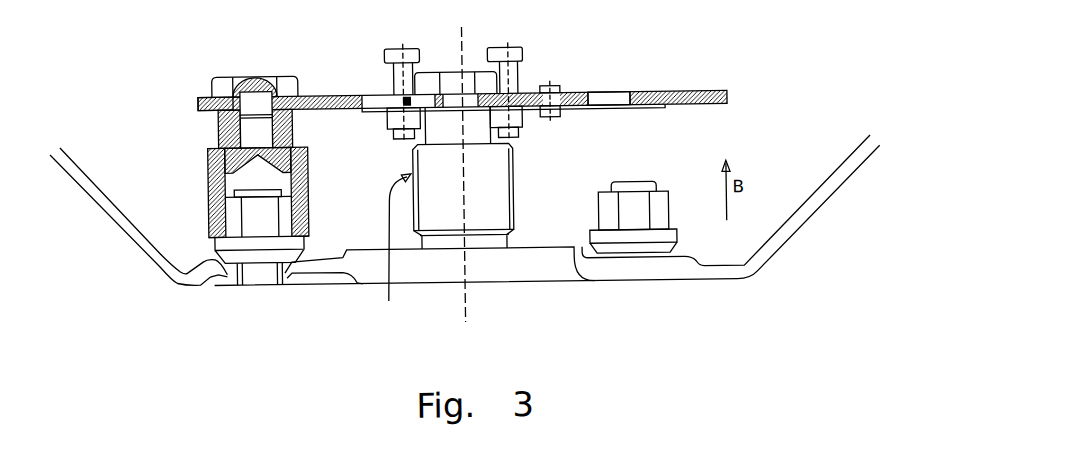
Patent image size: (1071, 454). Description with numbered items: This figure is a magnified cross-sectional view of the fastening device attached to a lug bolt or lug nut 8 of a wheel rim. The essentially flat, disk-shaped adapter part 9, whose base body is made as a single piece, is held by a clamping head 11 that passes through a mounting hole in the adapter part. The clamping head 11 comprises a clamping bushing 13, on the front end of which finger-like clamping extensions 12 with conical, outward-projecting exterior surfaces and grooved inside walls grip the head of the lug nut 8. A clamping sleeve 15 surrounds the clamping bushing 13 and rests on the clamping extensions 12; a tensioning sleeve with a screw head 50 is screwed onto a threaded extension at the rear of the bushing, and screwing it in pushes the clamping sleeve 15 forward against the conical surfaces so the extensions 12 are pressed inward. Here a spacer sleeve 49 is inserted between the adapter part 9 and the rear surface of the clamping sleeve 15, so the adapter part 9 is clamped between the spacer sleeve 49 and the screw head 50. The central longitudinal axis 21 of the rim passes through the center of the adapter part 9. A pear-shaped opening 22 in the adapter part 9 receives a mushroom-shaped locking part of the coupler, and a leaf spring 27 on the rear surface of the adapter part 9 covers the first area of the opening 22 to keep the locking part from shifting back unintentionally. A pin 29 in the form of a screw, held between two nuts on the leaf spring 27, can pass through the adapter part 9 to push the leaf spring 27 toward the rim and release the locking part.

The lug bolt or lug nut 8 is at (633, 212).
The adapter part 9 is at (678, 91).
The clamping head 11 is at (395, 258).
The clamping extensions 12 is at (208, 219).
The clamping bushing 13 is at (207, 144).
The clamping sleeve 15 is at (208, 188).
The central longitudinal axis 21 is at (463, 173).
The pear-shaped openings 22 is at (602, 97).
The leaf spring 27 is at (630, 109).
The pin 29 is at (393, 88).
The spacer sleeve 49 is at (198, 93).
The screw head 50 is at (240, 77).